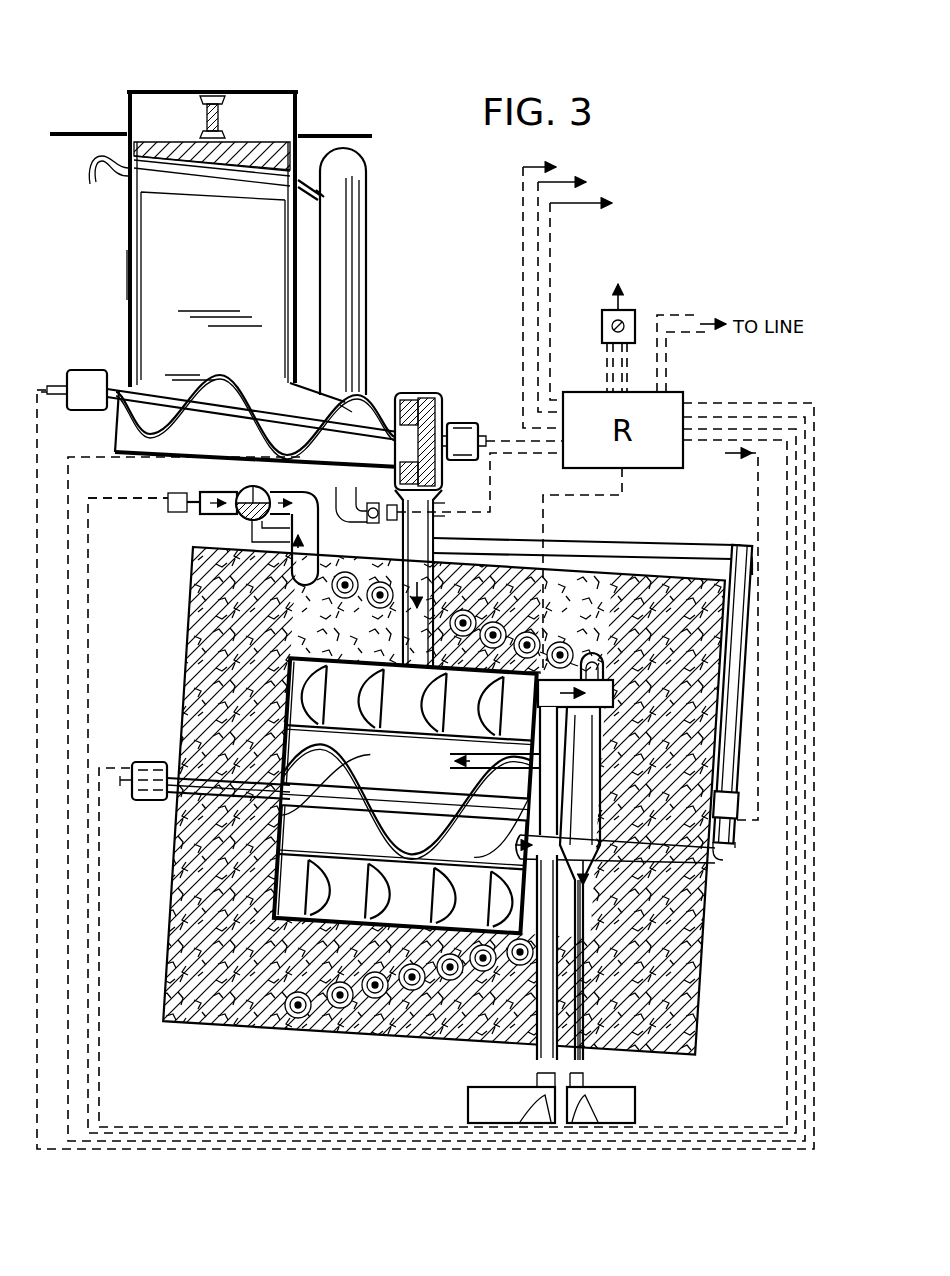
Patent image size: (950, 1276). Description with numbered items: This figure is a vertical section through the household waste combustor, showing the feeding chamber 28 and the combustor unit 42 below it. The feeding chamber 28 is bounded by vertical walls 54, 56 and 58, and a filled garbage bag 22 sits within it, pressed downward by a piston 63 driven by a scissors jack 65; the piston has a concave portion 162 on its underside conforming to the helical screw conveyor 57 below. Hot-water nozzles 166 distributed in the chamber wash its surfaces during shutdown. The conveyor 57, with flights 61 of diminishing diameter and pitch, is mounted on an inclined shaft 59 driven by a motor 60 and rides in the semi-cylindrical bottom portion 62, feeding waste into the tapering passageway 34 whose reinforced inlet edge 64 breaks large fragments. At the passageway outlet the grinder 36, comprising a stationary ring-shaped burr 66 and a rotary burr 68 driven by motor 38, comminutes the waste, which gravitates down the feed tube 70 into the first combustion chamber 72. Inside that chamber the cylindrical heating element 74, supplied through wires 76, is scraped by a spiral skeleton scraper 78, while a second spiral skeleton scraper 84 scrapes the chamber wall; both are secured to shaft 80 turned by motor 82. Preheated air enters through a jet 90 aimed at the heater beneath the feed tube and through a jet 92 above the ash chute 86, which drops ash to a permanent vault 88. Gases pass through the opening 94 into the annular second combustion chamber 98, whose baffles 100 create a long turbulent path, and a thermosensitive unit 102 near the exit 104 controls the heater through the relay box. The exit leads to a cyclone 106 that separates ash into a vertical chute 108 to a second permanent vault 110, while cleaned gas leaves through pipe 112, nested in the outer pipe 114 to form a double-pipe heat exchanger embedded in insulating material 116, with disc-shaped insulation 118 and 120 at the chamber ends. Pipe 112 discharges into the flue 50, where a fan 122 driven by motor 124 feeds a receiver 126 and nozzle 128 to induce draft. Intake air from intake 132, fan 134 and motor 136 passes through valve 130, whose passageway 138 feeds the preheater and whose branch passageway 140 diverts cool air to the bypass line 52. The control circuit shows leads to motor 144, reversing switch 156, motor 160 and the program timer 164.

The garbage bag 22 is at (211, 268).
The feeding and delivering chamber 28 is at (160, 90).
The tapering passageway 34 is at (360, 388).
The grinder 36 is at (427, 393).
The motor 38 is at (472, 425).
The combustor unit 42 is at (592, 573).
The flue 50 is at (366, 226).
The bypass air inlet line 52 is at (541, 546).
The vertical wall 54 is at (128, 252).
The vertical wall 56 is at (290, 270).
The helical screw conveyor 57 is at (348, 407).
The vertical wall 58 is at (132, 214).
The inclined shaft 59 is at (150, 462).
The motor 60 is at (84, 370).
The flights 61 is at (240, 374).
The semi-cylindrical bottom portion 62 is at (116, 462).
The piston 63 is at (272, 146).
The reinforcement 64 is at (296, 384).
The scissors jack 65 is at (232, 105).
The stationary ring-shaped burr 66 is at (410, 400).
The rotary burr 68 is at (442, 396).
The feed tube 70 is at (436, 500).
The first combustion chamber 72 is at (279, 845).
The heating element 74 is at (322, 812).
The wires 76 is at (747, 636).
The spiral skeleton scraper 78 is at (362, 818).
The shaft 80 is at (178, 764).
The motor 82 is at (130, 800).
The spiral skeleton scraper 84 is at (352, 746).
The ash chute 86 is at (560, 912).
The permanent vault 88 is at (480, 1122).
The jet 90 is at (458, 760).
The jet 92 is at (512, 873).
The opening 94 is at (293, 732).
The second combustion chamber 98 is at (403, 680).
The baffles 100 is at (405, 747).
The thermosensitive unit 102 is at (590, 650).
The exit 104 is at (542, 700).
The cyclone 106 is at (600, 725).
The vertical chute 108 is at (496, 813).
The second permanent vault 110 is at (612, 1088).
The pipe 112 is at (340, 598).
The outer pipe 114 is at (292, 580).
The insulating material 116 is at (562, 575).
The insulation 118 is at (738, 690).
The insulation 120 is at (198, 704).
The fan 122 is at (435, 518).
The motor 124 is at (435, 507).
The receiver 126 is at (445, 542).
The nozzle 128 is at (355, 502).
The valve 130 is at (245, 490).
The intake 132 is at (215, 492).
The fan 134 is at (200, 510).
The motor 136 is at (166, 508).
The passageway 138 is at (252, 520).
The branch passageway 140 is at (270, 492).
The motor 144 is at (614, 292).
The reversing switch 156 is at (633, 282).
The motor 160 is at (654, 297).
The concave portion 162 is at (160, 165).
The program timer 164 is at (628, 312).
The nozzles 166 is at (303, 180).